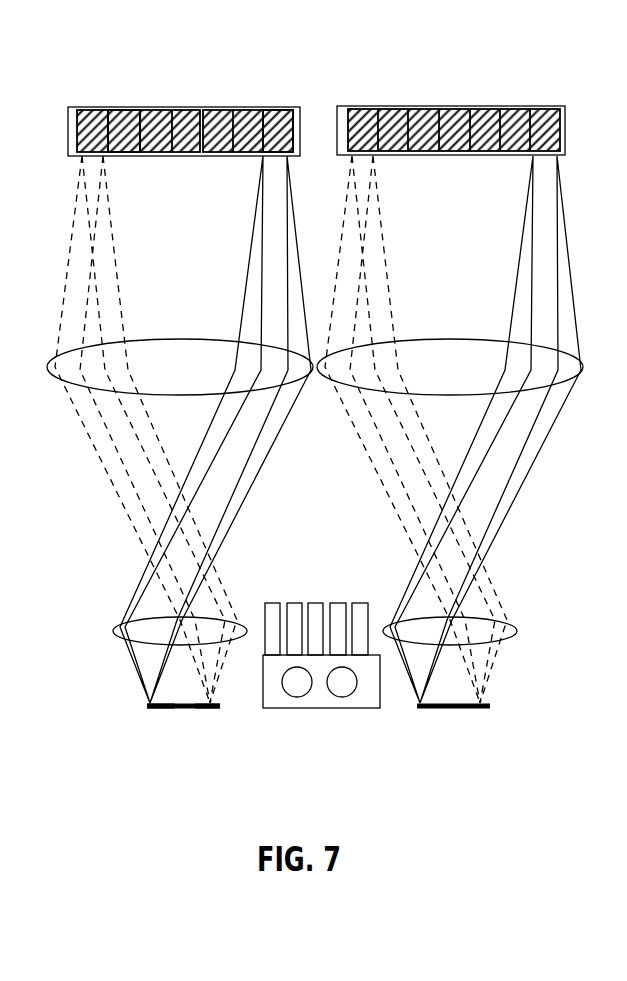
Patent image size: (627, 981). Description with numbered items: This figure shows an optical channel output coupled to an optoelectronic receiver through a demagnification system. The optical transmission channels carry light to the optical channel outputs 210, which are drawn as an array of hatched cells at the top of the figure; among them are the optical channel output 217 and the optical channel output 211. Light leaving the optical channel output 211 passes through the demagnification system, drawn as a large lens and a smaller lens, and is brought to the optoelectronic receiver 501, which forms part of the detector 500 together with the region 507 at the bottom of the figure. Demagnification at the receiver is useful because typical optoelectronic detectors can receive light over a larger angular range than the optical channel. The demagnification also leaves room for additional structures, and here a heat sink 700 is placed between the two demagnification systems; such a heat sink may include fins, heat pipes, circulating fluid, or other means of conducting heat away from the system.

The optical channel outputs 210 is at (180, 97).
The optical channel output 217 is at (108, 104).
The optical channel output 211 is at (275, 104).
The detector 500 is at (169, 730).
The optoelectronic receiver 501 is at (153, 710).
The second detector region 507 is at (213, 710).
The heat sink 700 is at (322, 709).